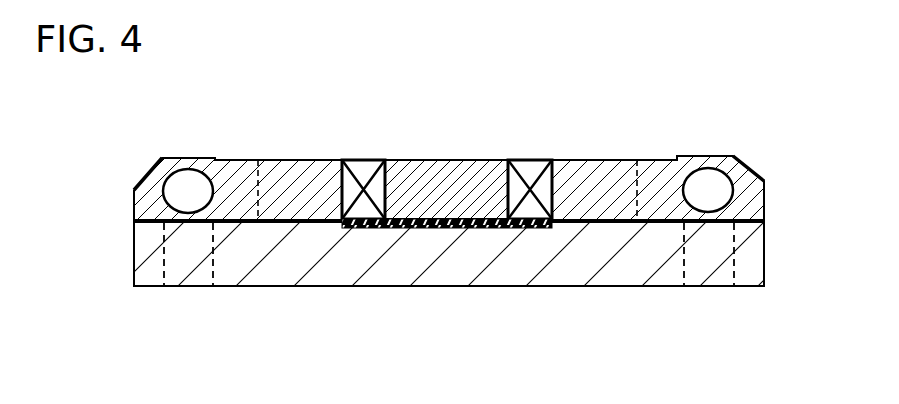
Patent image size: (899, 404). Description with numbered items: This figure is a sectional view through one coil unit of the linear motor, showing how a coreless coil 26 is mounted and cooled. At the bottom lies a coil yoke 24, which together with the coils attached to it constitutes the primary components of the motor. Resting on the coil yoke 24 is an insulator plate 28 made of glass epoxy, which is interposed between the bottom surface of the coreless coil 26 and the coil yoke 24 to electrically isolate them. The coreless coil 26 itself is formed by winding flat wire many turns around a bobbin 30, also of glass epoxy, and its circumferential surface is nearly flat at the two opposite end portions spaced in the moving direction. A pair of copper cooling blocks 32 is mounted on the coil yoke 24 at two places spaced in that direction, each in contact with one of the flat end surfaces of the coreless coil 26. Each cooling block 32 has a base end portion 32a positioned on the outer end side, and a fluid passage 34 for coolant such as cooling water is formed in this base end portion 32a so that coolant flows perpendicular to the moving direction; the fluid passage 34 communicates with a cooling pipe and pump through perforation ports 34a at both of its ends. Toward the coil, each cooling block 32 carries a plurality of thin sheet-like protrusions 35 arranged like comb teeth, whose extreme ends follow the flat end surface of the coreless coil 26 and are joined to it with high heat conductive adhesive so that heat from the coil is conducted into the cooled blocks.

The coil yoke 24 is at (356, 257).
The coreless coil 26 is at (529, 170).
The insulator plate 28 is at (452, 232).
The bobbin 30 is at (447, 183).
The cooling block 32 is at (247, 176).
The base end portion 32a is at (133, 190).
The fluid passage 34 is at (198, 182).
The perforation port 34a is at (178, 255).
The sheet-like protrusion 35 is at (302, 172).